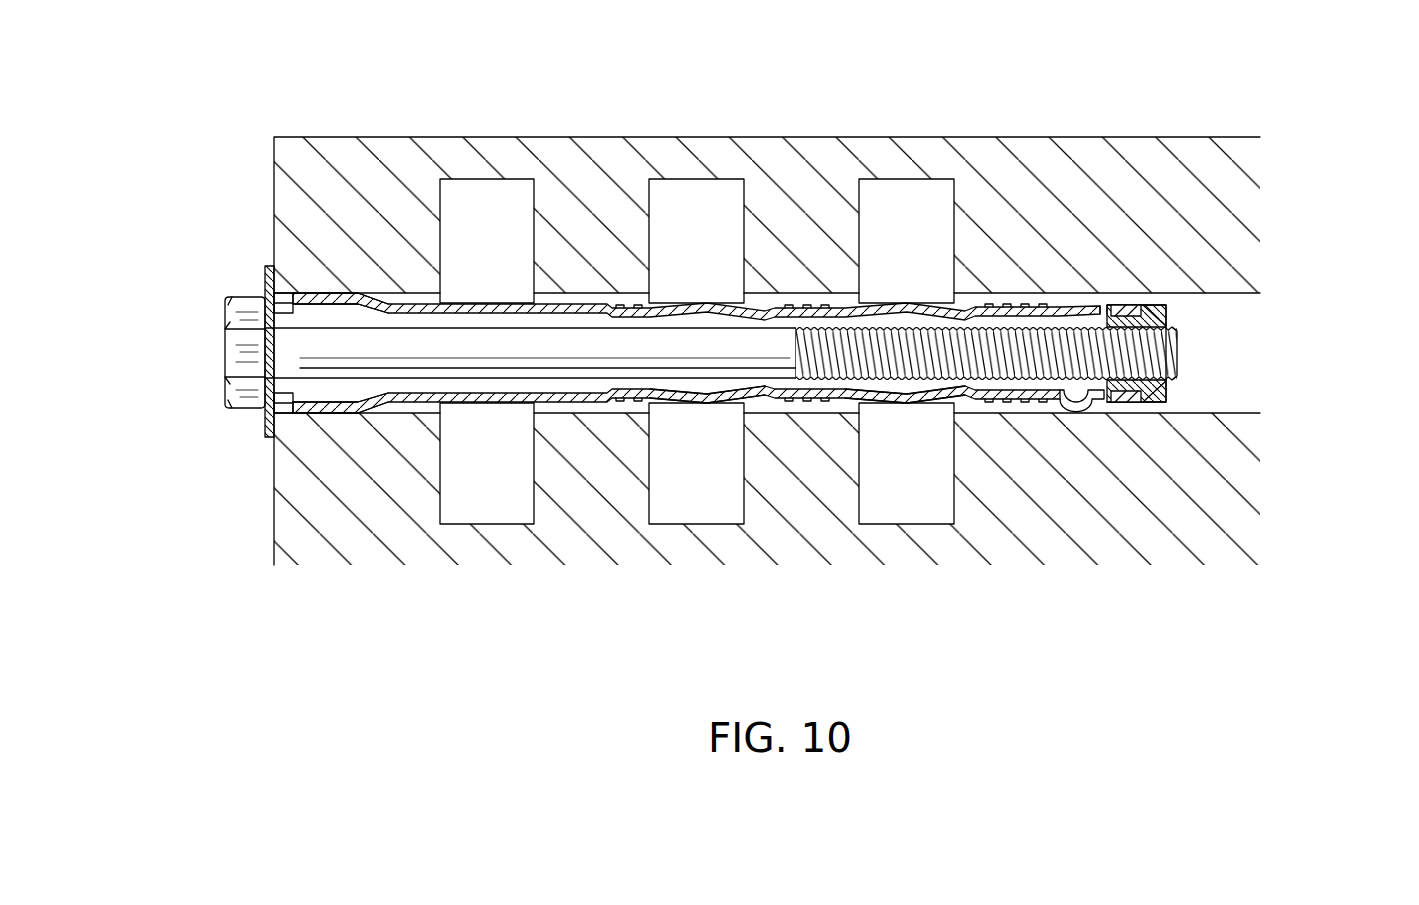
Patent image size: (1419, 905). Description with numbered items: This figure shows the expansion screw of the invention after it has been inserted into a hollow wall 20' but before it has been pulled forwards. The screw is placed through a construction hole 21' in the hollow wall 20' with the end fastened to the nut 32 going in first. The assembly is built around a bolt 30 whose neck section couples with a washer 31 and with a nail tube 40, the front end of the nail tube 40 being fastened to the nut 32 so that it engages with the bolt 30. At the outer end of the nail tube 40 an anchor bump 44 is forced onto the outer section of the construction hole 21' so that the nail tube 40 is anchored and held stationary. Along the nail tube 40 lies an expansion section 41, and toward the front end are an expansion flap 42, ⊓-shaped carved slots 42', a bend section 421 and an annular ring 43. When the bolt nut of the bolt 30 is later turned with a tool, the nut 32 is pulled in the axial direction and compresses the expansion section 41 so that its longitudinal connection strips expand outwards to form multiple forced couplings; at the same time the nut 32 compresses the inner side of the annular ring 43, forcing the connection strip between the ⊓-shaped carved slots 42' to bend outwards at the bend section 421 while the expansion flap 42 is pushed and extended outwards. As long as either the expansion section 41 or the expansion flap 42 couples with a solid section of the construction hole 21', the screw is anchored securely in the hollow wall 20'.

The hollow wall 20' is at (767, 289).
The construction hole 21' is at (832, 426).
The bolt 30 is at (247, 342).
The washer 31 is at (265, 422).
The nut 32 is at (1159, 392).
The nail tube 40 is at (473, 308).
The expansion section 41 is at (723, 407).
The expansion flap 42 is at (850, 218).
The ⊓-shaped carved slots 42' is at (1150, 182).
The bend section 421 is at (1087, 402).
The annular ring 43 is at (1143, 306).
The anchor bump 44 is at (338, 407).